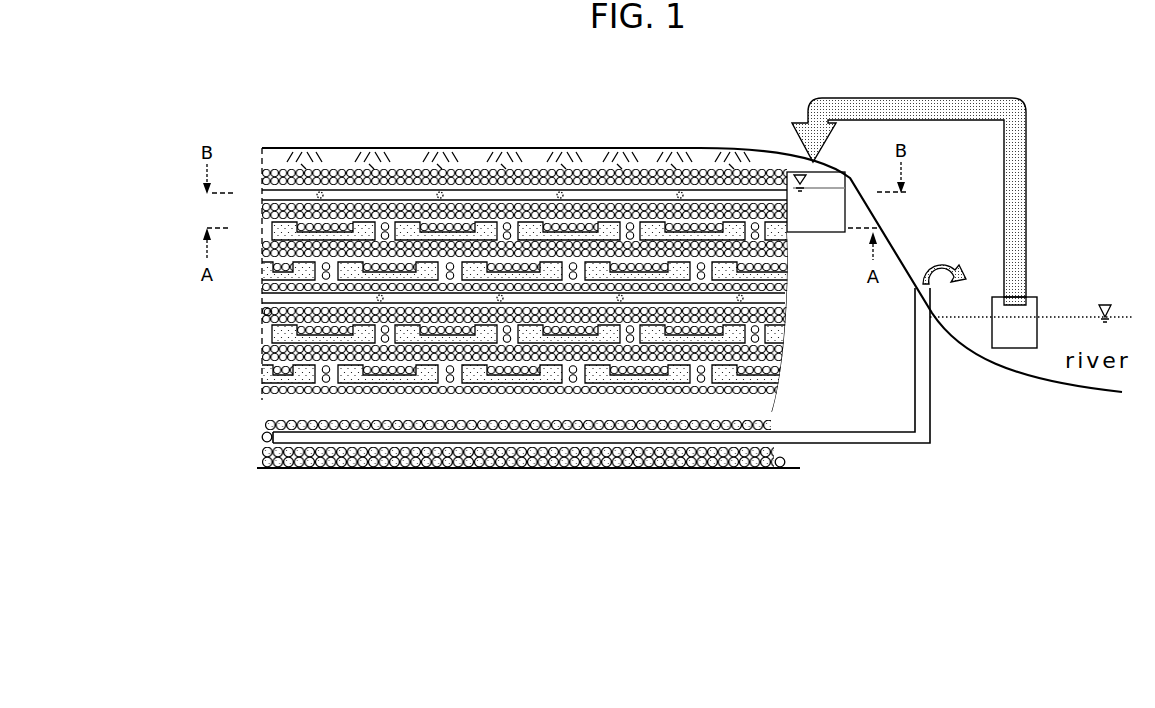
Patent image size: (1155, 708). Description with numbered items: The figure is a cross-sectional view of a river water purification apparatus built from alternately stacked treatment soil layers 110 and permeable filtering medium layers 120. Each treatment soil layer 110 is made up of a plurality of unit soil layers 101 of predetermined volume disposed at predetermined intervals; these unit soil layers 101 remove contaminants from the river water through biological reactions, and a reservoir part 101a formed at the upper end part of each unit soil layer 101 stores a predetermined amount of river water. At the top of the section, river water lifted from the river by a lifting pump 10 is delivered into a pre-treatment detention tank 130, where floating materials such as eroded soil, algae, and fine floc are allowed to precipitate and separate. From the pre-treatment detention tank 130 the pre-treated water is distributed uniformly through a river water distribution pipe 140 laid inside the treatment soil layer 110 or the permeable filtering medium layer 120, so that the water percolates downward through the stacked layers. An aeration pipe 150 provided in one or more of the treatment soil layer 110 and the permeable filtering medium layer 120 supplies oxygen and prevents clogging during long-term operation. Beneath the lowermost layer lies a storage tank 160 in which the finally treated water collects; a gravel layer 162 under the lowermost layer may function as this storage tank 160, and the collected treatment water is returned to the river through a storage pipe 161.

The lifting pump 10 is at (1032, 297).
The unit soil layer 101 is at (268, 331).
The reservoir part 101a is at (264, 312).
The treatment soil layer 110 is at (240, 373).
The permeable filtering medium layer 120 is at (402, 172).
The pre-treatment detention tank 130 is at (797, 230).
The river water distribution pipe 140 is at (348, 195).
The aeration pipe 150 is at (740, 302).
The storage tank 160 is at (252, 452).
The storage pipe 161 is at (827, 444).
The gravel layer 162 is at (647, 470).